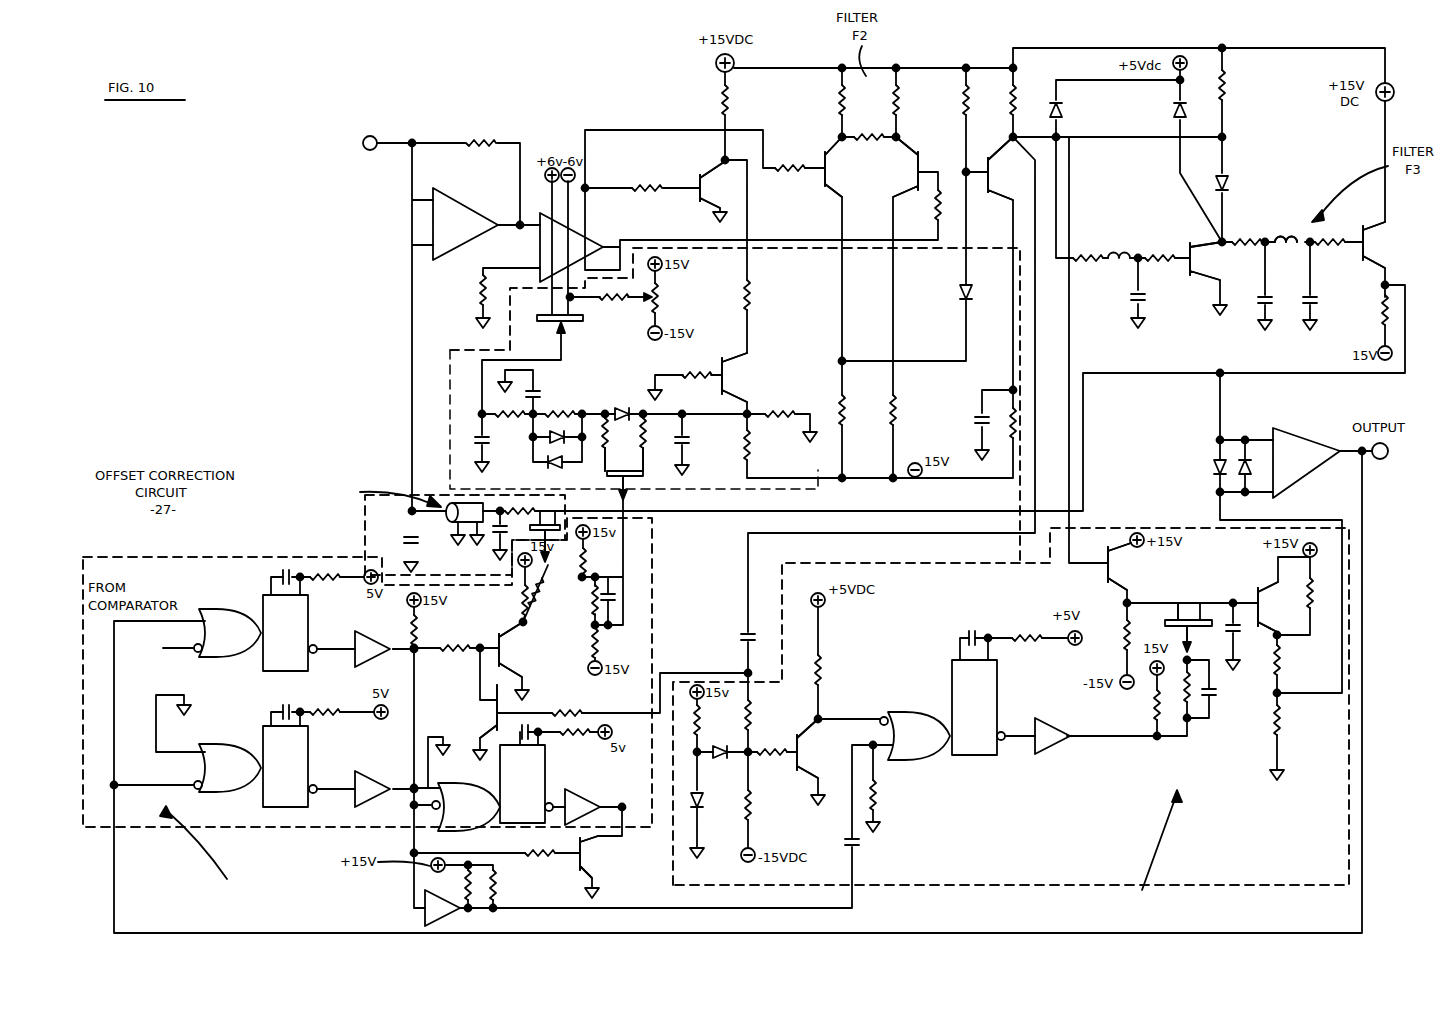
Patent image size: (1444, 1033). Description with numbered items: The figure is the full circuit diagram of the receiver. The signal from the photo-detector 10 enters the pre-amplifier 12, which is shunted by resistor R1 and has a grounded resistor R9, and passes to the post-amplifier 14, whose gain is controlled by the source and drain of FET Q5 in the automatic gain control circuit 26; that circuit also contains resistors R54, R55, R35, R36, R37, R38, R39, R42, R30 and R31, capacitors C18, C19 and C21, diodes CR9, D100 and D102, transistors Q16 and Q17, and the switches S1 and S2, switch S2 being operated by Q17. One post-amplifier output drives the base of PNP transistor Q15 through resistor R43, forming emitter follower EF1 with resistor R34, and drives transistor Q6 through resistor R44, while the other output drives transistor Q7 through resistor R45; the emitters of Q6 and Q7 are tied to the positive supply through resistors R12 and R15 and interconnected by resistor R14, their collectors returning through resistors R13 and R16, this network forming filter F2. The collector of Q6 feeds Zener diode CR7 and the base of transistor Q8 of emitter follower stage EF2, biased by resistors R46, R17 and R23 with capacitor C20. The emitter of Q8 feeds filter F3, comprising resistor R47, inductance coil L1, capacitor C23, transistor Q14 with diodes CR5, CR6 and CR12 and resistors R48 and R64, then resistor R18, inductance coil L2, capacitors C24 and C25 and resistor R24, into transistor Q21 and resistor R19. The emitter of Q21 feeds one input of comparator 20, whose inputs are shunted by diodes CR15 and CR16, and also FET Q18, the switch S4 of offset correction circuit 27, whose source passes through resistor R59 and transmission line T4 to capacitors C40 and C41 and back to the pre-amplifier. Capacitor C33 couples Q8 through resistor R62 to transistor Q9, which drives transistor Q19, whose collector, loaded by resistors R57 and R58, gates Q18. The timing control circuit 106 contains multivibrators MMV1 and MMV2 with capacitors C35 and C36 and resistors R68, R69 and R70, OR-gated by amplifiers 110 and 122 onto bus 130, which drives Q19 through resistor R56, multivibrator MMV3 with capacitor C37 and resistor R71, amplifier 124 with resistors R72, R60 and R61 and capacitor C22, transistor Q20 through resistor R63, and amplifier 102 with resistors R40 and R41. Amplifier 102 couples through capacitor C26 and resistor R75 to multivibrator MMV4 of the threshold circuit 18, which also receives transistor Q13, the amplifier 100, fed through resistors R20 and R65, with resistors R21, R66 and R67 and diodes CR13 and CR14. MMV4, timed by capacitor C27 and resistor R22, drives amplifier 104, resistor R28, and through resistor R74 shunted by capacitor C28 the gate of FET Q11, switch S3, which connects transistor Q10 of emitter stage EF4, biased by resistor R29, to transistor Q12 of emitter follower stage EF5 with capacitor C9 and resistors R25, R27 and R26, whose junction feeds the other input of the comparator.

The photo-detector 10 is at (303, 159).
The pre-amplifier 12 is at (441, 197).
The post-amplifier 14 is at (590, 238).
The threshold circuit 18 is at (1011, 721).
The comparator 20 is at (1283, 472).
The automatic gain control circuit 26 is at (735, 405).
The offset correction circuit 27 is at (357, 535).
The amplifier 100 is at (815, 745).
The amplifier 102 is at (425, 914).
The amplifier 104 is at (1050, 745).
The timing control circuit 106 is at (367, 721).
The amplifier 110 is at (368, 628).
The amplifier 122 is at (370, 775).
The amplifier 124 is at (578, 800).
The bus 130 is at (410, 668).
The resistor R1 is at (489, 133).
The resistor R9 is at (466, 291).
The resistor R12 is at (821, 100).
The resistor R13 is at (856, 406).
The resistor R14 is at (869, 125).
The resistor R15 is at (913, 98).
The resistor R16 is at (909, 406).
The resistor R17 is at (998, 98).
The resistor R18 is at (1247, 229).
The resistor R19 is at (1364, 310).
The resistor R20 is at (765, 705).
The resistor R21 is at (833, 679).
The resistor R22 is at (1026, 622).
The resistor R23 is at (1010, 404).
The resistor R24 is at (1330, 228).
The resistor R25 is at (1323, 587).
The resistor R26 is at (1295, 723).
The resistor R27 is at (1295, 660).
The resistor R28 is at (1136, 705).
The resistor R29 is at (1110, 638).
The resistor R30 is at (611, 448).
The resistor R31 is at (657, 439).
The resistor R34 is at (706, 99).
The resistor R35 is at (764, 295).
The resistor R36 is at (764, 445).
The resistor R37 is at (689, 362).
The resistor R38 is at (508, 424).
The resistor R39 is at (783, 400).
The resistor R40 is at (448, 885).
The resistor R41 is at (510, 885).
The resistor R42 is at (560, 401).
The resistor R43 is at (645, 175).
The resistor R44 is at (790, 155).
The resistor R45 is at (920, 211).
The resistor R46 is at (947, 104).
The resistor R47 is at (1087, 246).
The resistor R48 is at (1241, 84).
The resistor R54 is at (675, 298).
The resistor R55 is at (614, 307).
The resistor R56 is at (459, 637).
The resistor R57 is at (503, 600).
The resistor R58 is at (544, 593).
The resistor R59 is at (515, 520).
The resistor R60 is at (592, 608).
The resistor R61 is at (611, 643).
The resistor R62 is at (567, 699).
The resistor R63 is at (536, 843).
The resistor R64 is at (1160, 244).
The resistor R65 is at (772, 740).
The resistor R66 is at (714, 720).
The resistor R67 is at (766, 805).
The resistor R68 is at (327, 589).
The resistor R69 is at (327, 699).
The resistor R70 is at (431, 629).
The resistor R71 is at (583, 751).
The resistor R72 is at (599, 563).
The resistor R74 is at (1190, 712).
The resistor R75 is at (892, 795).
The capacitor C9 is at (1240, 637).
The capacitor C18 is at (478, 440).
The capacitor C19 is at (548, 381).
The capacitor C20 is at (964, 416).
The capacitor C21 is at (695, 443).
The capacitor C22 is at (612, 597).
The capacitor C23 is at (1124, 298).
The capacitor C24 is at (1278, 296).
The capacitor C25 is at (1323, 288).
The capacitor C26 is at (869, 850).
The capacitor C27 is at (971, 625).
The capacitor C28 is at (1226, 691).
The capacitor C33 is at (745, 635).
The capacitor C35 is at (278, 576).
The capacitor C36 is at (255, 709).
The capacitor C37 is at (550, 741).
The capacitor C40 is at (395, 532).
The capacitor C41 is at (484, 548).
The field effect transistor Q5 is at (565, 330).
The PNP transistor Q6 is at (840, 167).
The PNP transistor Q7 is at (902, 167).
The PNP transistor Q8 is at (1002, 168).
The NPN transistor Q9 is at (488, 711).
The NPN transistor Q10 is at (1126, 567).
The field effect transistor Q11 is at (1180, 618).
The NPN transistor Q12 is at (1277, 607).
The NPN transistor Q13 is at (789, 750).
The transistor Q14 is at (1209, 261).
The PNP transistor Q15 is at (719, 184).
The transistor Q16 is at (748, 377).
The field effect transistor Q17 is at (641, 489).
The field effect transistor Q18 is at (562, 554).
The NPN transistor Q19 is at (520, 649).
The NPN transistor Q20 is at (602, 857).
The NPN transistor Q21 is at (1382, 245).
The diode CR5 is at (1073, 112).
The diode CR6 is at (1160, 112).
The Zener diode CR7 is at (960, 294).
The diode CR9 is at (613, 400).
The diode CR12 is at (1244, 178).
The diode CR13 is at (717, 763).
The diode CR14 is at (715, 811).
The diode CR15 is at (1250, 458).
The diode CR16 is at (1213, 467).
The diode D100 is at (530, 445).
The diode D102 is at (529, 467).
The emitter follower EF1 is at (722, 158).
The emitter follower stage EF2 is at (984, 160).
The emitter stage EF4 is at (1150, 583).
The emitter follower stage EF5 is at (1250, 598).
The filter F2 is at (927, 48).
The filter F3 is at (1348, 202).
The inductance coil L1 is at (1119, 243).
The inductance coil L2 is at (1286, 223).
The switch S1 is at (566, 482).
The switch S2 is at (637, 462).
The switch S3 is at (1199, 618).
The switch S4 is at (545, 512).
The transmission line T4 is at (413, 500).
The multivibrator MMV1 is at (280, 662).
The multivibrator MMV2 is at (268, 795).
The multivibrator MMV3 is at (510, 825).
The multivibrator MMV4 is at (968, 745).